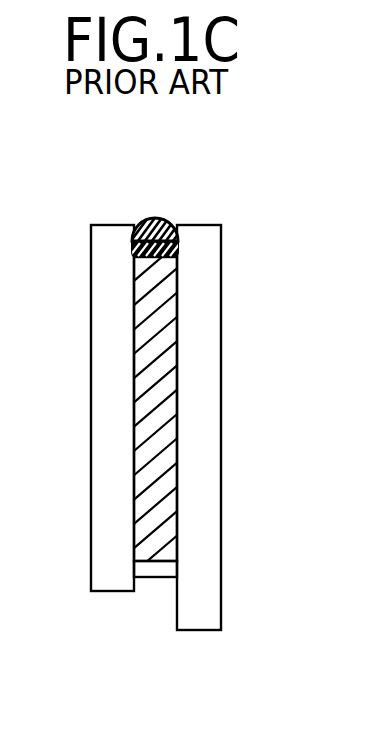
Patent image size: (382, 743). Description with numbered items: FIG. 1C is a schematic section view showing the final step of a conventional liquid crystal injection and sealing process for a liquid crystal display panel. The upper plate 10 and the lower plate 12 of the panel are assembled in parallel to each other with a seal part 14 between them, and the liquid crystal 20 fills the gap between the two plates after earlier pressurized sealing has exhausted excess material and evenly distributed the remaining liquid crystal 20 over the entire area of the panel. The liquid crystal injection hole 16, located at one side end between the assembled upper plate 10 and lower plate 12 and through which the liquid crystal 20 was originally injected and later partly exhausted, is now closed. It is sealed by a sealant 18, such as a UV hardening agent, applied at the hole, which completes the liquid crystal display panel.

The upper plate 10 is at (91, 359).
The lower plate 12 is at (221, 332).
The seal part 14 is at (158, 578).
The liquid crystal injection hole 16 is at (150, 219).
The sealant 18 is at (178, 228).
The liquid crystal 20 is at (163, 455).